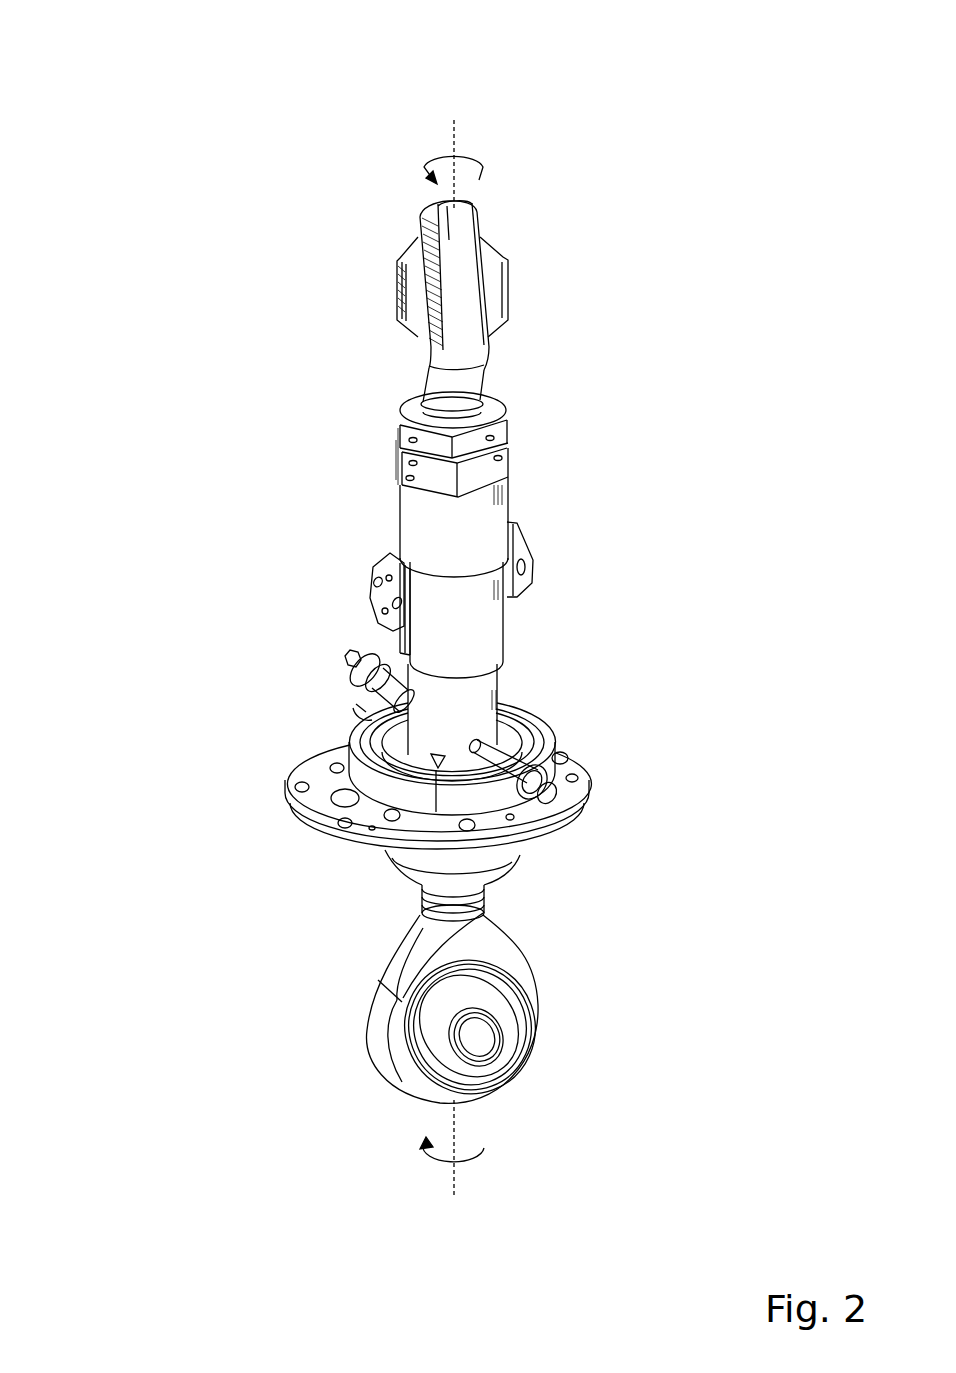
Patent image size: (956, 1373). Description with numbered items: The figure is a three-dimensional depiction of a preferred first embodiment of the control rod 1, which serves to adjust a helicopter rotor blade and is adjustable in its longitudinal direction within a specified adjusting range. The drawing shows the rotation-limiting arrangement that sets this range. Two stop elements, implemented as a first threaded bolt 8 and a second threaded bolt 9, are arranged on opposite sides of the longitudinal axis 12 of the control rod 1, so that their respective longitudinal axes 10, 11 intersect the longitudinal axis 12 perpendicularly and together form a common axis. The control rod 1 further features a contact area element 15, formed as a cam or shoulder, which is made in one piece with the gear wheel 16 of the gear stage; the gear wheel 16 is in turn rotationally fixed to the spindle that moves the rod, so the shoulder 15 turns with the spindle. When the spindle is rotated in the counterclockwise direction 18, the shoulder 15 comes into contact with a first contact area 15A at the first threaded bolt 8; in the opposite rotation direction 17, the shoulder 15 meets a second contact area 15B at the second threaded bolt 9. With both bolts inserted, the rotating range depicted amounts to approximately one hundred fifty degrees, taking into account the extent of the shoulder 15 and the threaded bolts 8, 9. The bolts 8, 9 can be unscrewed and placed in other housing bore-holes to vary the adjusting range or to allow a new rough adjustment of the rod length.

The control rod 1 is at (520, 345).
The first threaded bolt 8 is at (555, 778).
The second threaded bolt 9 is at (345, 660).
The longitudinal axis of first threaded bolt 10 is at (635, 855).
The longitudinal axis of second threaded bolt 11 is at (350, 655).
The longitudinal axis of control rod 12 is at (455, 135).
The contact area element 15 is at (360, 745).
The first contact area 15A is at (437, 757).
The second contact area 15B is at (372, 700).
The gear wheel 16 is at (357, 757).
The opposite rotation direction 17 is at (435, 1163).
The counterclockwise rotation direction 18 is at (425, 168).